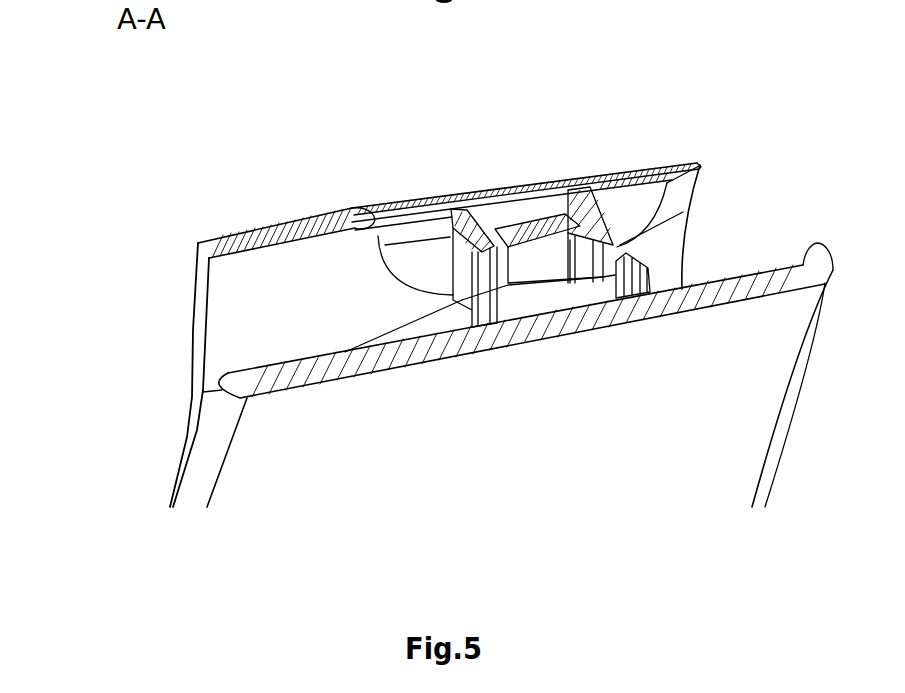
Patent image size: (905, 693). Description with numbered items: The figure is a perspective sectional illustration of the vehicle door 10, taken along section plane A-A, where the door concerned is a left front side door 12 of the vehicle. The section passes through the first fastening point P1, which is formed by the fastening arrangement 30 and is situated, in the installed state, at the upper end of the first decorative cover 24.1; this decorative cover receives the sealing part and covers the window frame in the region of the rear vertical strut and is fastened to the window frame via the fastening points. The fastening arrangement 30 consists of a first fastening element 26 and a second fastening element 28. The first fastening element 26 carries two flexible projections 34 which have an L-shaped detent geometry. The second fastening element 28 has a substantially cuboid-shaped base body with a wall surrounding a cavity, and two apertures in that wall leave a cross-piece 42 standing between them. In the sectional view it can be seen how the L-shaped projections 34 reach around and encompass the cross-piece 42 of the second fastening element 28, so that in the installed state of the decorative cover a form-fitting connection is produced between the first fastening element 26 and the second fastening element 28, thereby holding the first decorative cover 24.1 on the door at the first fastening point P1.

The vehicle door 10 is at (460, 284).
The left front side door 12 is at (183, 147).
The first fastening element 26 is at (383, 172).
The second fastening element 28 is at (697, 215).
The fastening arrangement 30 is at (502, 183).
The first decorative cover 24.1 is at (772, 280).
The flexible projections 34 is at (468, 234).
The cross-piece 42 is at (513, 232).
The first fastening point P1 is at (590, 120).